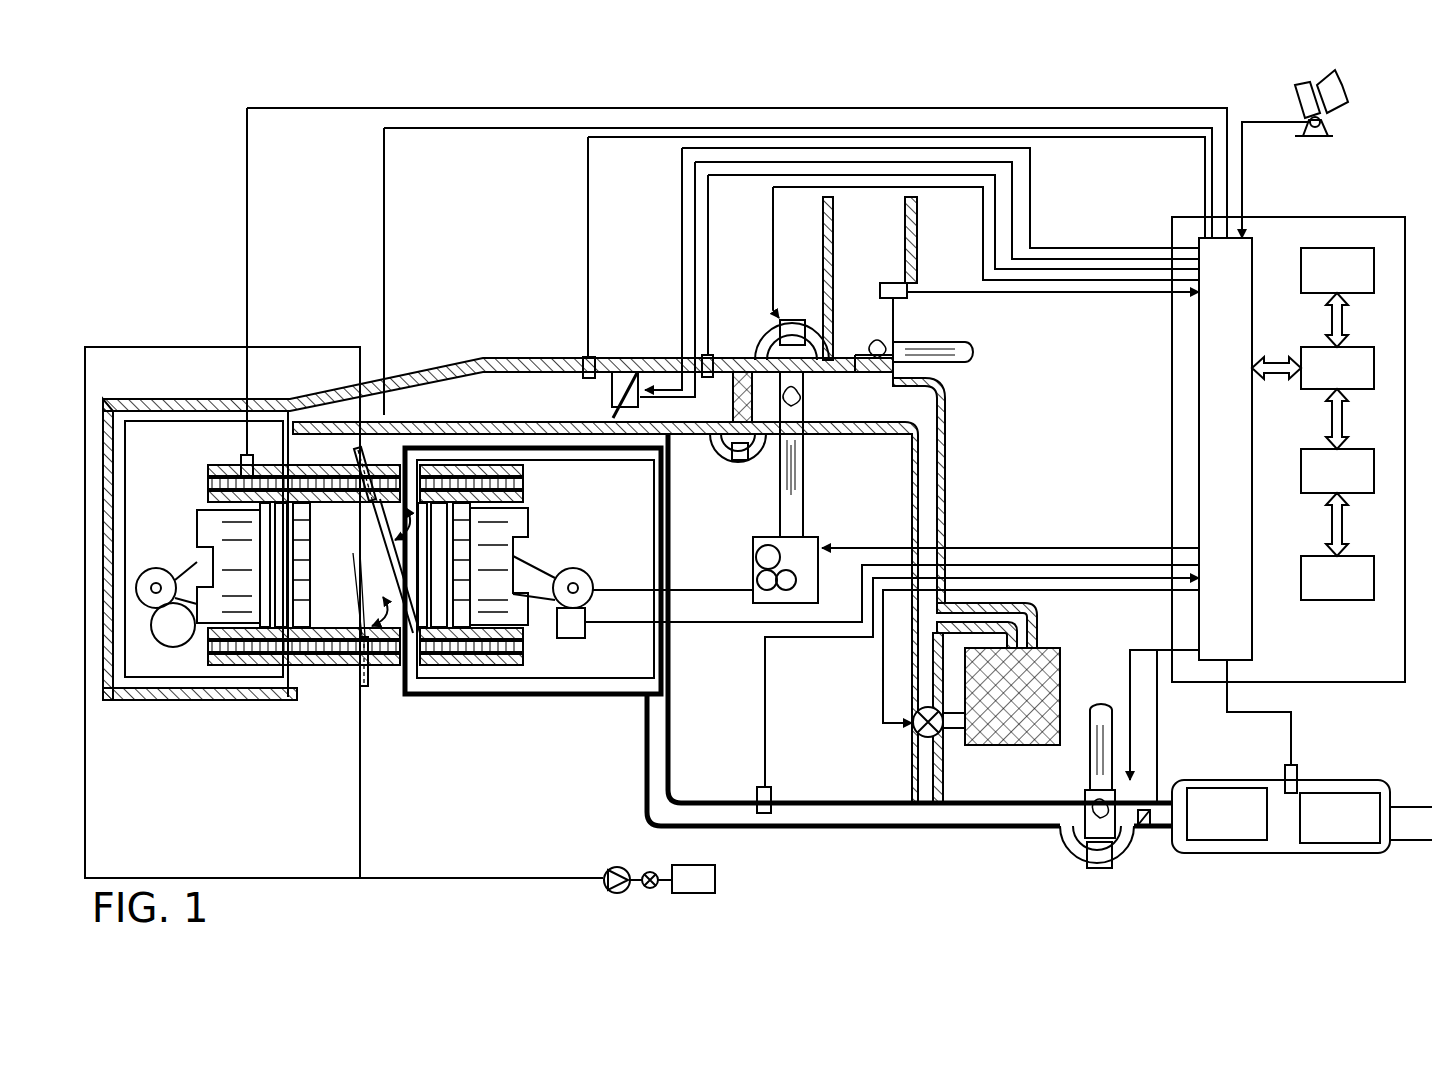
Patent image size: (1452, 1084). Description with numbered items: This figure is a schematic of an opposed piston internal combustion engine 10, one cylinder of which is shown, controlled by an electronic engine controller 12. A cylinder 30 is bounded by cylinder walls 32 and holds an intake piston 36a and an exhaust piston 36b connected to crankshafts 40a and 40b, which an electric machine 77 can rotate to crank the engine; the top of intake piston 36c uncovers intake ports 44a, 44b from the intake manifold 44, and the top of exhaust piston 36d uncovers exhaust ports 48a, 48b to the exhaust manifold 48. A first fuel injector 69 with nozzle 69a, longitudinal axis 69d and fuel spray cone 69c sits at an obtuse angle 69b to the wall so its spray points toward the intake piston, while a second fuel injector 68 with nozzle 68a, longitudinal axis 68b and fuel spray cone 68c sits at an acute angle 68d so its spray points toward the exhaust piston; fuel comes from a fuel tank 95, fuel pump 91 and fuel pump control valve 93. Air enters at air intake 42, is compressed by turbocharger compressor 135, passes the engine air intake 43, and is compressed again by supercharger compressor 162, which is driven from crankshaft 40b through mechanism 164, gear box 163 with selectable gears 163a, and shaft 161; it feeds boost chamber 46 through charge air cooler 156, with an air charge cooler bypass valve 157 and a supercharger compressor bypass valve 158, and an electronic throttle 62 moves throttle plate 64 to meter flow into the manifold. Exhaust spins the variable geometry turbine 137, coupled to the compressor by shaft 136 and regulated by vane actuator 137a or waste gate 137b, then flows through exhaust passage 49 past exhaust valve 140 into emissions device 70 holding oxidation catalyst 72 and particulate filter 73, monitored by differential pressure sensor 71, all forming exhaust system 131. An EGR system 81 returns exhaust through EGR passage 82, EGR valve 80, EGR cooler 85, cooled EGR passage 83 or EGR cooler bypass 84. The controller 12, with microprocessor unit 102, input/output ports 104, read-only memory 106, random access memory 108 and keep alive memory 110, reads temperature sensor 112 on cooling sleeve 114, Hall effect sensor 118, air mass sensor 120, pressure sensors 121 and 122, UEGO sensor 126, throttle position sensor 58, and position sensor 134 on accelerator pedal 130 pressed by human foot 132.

The opposed piston internal combustion engine 10 is at (206, 333).
The electronic engine controller 12 is at (1392, 216).
The cylinder 30 is at (321, 660).
The cylinder walls 32 is at (520, 507).
The intake piston 36a is at (215, 545).
The exhaust piston 36b is at (493, 560).
The top of intake piston 36c is at (315, 517).
The top of exhaust piston 36d is at (440, 665).
The crankshaft 40a is at (152, 610).
The crankshaft 40b is at (578, 570).
The air intake 42 is at (870, 288).
The engine air intake 43 is at (540, 288).
The intake manifold 44 is at (498, 529).
The intake port 44a is at (282, 672).
The intake port 44b is at (288, 503).
The intake boost chamber 46 is at (605, 592).
The exhaust manifold 48 is at (565, 456).
The exhaust port 48a is at (413, 697).
The exhaust port 48b is at (414, 456).
The exhaust passage 49 is at (1165, 790).
The throttle position sensor 58 is at (645, 400).
The electronic throttle 62 is at (613, 372).
The throttle plate 64 is at (633, 372).
The second fuel injector 68 is at (368, 450).
The nozzle 68a is at (383, 480).
The electrode lead 68b is at (376, 445).
The fuel spray cone 68c is at (392, 555).
The acute angle 68d is at (470, 540).
The first fuel injector 69 is at (362, 684).
The nozzle 69a is at (356, 668).
The obtuse angle 69b is at (383, 673).
The fuel spray cone 69c is at (348, 568).
The longitudinal axis 69d is at (358, 697).
The emissions device 70 is at (1210, 782).
The differential pressure sensor 71 is at (1297, 776).
The oxidation catalyst 72 is at (1227, 814).
The particulate filter 73 is at (1340, 818).
The electric machine 77 is at (173, 625).
The EGR valve 80 is at (915, 732).
The EGR system 81 is at (872, 698).
The EGR passage 82 is at (930, 512).
The cooled EGR passage 83 is at (1020, 640).
The EGR cooler bypass 84 is at (927, 690).
The EGR cooler 85 is at (972, 745).
The fuel pump 91 is at (620, 870).
The fuel pump control valve 93 is at (644, 886).
The fuel tank 95 is at (693, 879).
The microprocessor unit 102 is at (1376, 360).
The input/output ports 104 is at (1253, 240).
The read-only memory 106 is at (1376, 268).
The random access memory 108 is at (1376, 465).
The keep alive memory 110 is at (1376, 572).
The temperature sensor 112 is at (241, 462).
The cooling sleeve 114 is at (210, 498).
The Hall effect sensor 118 is at (572, 638).
The air mass sensor 120 is at (907, 290).
The pressure sensor 121 is at (583, 360).
The pressure sensor 122 is at (712, 356).
The UEGO sensor 126 is at (760, 790).
The accelerator pedal 130 is at (1298, 93).
The exhaust system 131 is at (940, 850).
The human foot 132 is at (1347, 88).
The position sensor 134 is at (1333, 128).
The turbocharger compressor 135 is at (885, 350).
The shaft 136 is at (940, 366).
The turbocharger variable geometry turbine 137 is at (1086, 798).
The vane actuator 137a is at (1085, 812).
The waste gate 137b is at (1098, 868).
The exhaust valve 140 is at (1147, 830).
The charge air cooler 156 is at (742, 372).
The air charge cooler bypass valve 157 is at (738, 462).
The supercharger compressor bypass valve 158 is at (792, 322).
The shaft 161 is at (778, 520).
The supercharger compressor 162 is at (800, 412).
The gear box 163 is at (752, 575).
The gears 163a is at (774, 556).
The mechanism 164 is at (745, 592).